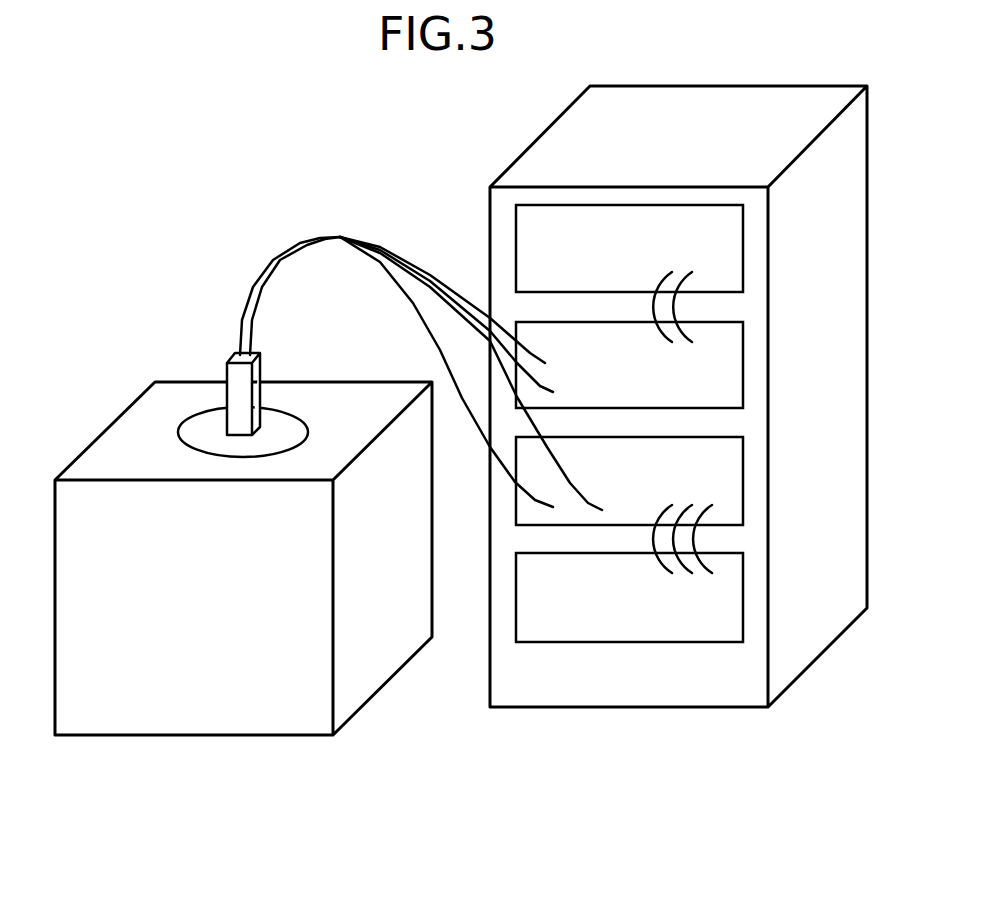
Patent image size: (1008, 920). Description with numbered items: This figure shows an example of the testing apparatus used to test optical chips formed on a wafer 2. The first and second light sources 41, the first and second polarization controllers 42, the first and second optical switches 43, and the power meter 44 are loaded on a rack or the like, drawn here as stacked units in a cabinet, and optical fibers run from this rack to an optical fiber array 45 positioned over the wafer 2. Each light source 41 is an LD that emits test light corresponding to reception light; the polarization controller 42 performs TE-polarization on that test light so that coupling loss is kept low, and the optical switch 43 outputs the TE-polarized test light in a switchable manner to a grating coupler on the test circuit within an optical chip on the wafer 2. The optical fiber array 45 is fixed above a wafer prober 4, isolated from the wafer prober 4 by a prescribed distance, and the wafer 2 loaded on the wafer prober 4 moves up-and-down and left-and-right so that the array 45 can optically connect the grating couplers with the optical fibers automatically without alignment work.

The wafer 2 is at (210, 428).
The wafer prober 4 is at (191, 717).
The light source 41 is at (743, 247).
The polarization controller 42 is at (743, 362).
The optical switch 43 is at (743, 480).
The power meter 44 is at (743, 597).
The optical fiber array 45 is at (225, 396).